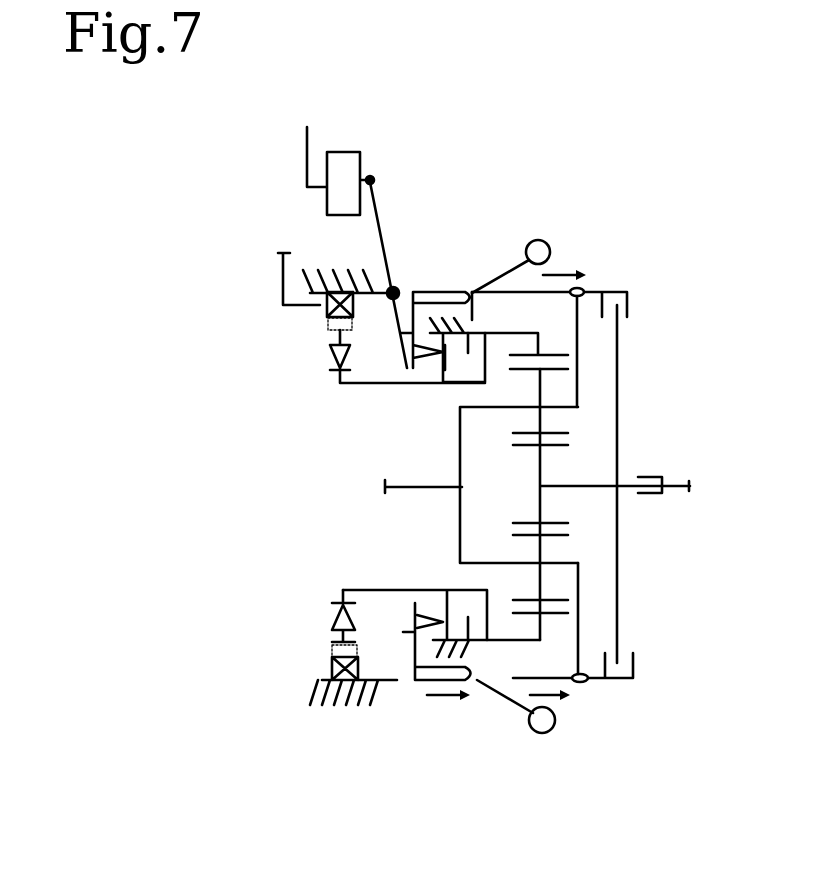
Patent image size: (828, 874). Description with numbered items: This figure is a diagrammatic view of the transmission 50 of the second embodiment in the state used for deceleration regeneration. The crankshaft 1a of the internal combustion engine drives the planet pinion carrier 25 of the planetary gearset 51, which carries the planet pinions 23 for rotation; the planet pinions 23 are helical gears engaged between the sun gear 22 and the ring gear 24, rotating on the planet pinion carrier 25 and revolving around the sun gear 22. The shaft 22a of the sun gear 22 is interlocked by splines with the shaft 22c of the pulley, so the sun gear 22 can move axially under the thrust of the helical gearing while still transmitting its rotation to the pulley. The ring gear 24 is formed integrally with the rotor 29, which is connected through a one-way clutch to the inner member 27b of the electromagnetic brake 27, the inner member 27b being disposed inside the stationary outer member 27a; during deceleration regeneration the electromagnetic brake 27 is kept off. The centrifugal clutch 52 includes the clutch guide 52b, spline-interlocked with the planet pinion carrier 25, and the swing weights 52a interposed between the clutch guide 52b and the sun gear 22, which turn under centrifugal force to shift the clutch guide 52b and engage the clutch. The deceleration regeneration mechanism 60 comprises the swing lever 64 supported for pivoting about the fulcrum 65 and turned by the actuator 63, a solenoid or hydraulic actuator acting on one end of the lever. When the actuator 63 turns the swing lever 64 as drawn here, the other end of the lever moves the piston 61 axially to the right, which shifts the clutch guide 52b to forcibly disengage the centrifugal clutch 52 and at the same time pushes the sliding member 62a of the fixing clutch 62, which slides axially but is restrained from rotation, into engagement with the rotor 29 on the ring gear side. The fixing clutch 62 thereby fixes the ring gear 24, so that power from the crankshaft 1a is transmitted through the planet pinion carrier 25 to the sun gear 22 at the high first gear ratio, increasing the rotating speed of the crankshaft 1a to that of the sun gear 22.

The crankshaft 1a is at (398, 483).
The sun gear 22 is at (542, 505).
The shaft of the sun gear 22a is at (633, 482).
The shaft of the pulley 22c is at (678, 493).
The planet pinions 23 is at (542, 423).
The ring gear 24 is at (527, 638).
The planet pinion carrier 25 is at (487, 548).
The electromagnetic brake 27 is at (318, 326).
The stationary outer member 27a is at (325, 672).
The inner member 27b is at (330, 642).
The rotor 29 is at (423, 587).
The transmission 50 is at (328, 732).
The planetary gearset 51 is at (581, 692).
The centrifugal clutch 52 is at (634, 292).
The swing weights 52a is at (552, 244).
The clutch guide 52b is at (479, 668).
The deceleration regeneration mechanism 60 is at (447, 276).
The piston 61 is at (427, 290).
The fixing clutch 62 is at (442, 370).
The sliding member 62a is at (471, 352).
The actuator 63 is at (341, 152).
The swing lever 64 is at (382, 238).
The fulcrum 65 is at (390, 300).